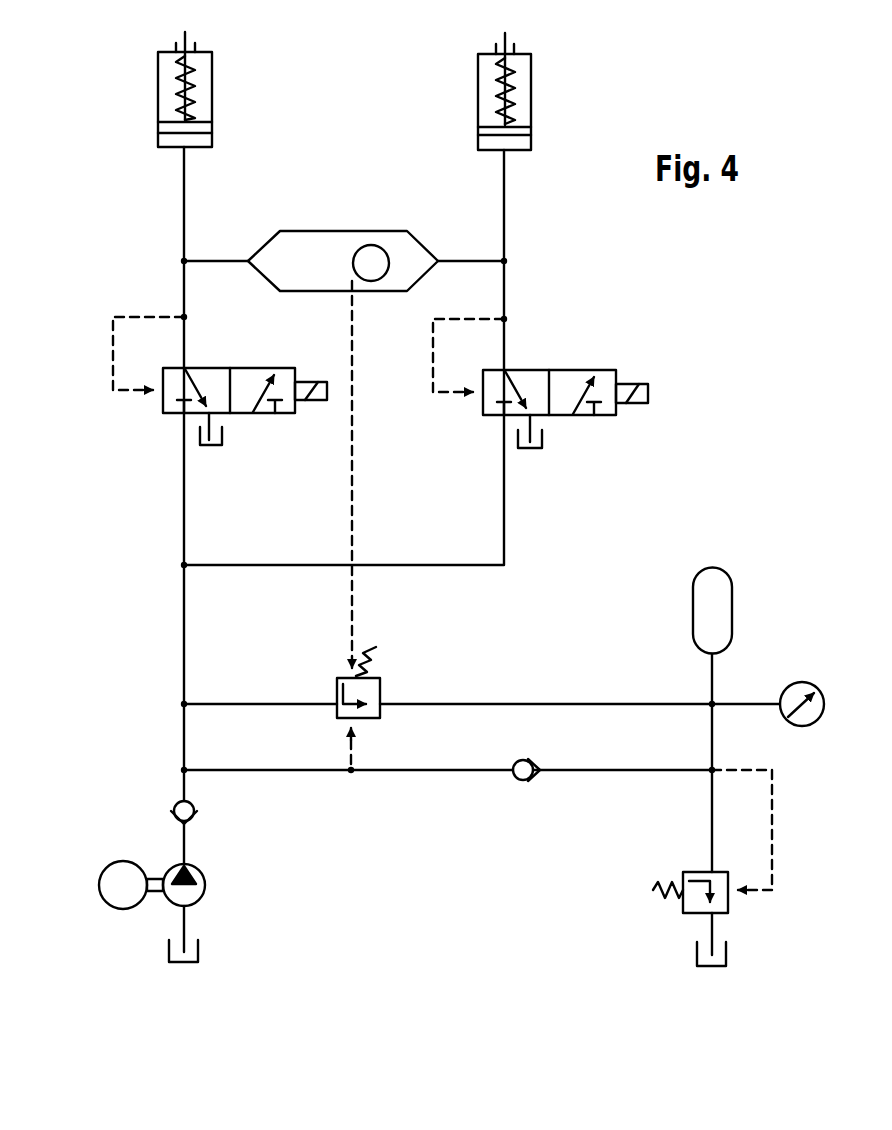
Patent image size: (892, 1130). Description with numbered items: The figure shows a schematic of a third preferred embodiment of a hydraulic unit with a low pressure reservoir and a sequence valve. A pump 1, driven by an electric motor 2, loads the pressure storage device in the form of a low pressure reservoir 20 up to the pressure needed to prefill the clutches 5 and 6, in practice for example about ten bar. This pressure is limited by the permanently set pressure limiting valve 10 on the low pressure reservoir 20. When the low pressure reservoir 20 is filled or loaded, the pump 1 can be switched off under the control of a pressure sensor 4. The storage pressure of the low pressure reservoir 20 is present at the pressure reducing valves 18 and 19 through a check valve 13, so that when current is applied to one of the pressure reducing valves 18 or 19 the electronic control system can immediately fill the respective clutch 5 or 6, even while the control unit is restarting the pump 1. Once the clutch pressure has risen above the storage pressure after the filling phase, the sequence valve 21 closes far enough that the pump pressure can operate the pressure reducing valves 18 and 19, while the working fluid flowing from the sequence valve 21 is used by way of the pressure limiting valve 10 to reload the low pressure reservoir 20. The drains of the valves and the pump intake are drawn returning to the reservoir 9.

The pump 1 is at (191, 894).
The electric motor 2 is at (99, 885).
The pressure sensor 4 is at (805, 720).
The clutch 5 is at (478, 68).
The clutch 6 is at (200, 68).
The reservoir / tank 9 is at (215, 446).
The pressure limiting valve 10 is at (703, 878).
The check valve 13 is at (520, 781).
The pressure reducing valve 18 is at (603, 378).
The pressure reducing valve 19 is at (245, 375).
The low pressure reservoir 20 is at (722, 603).
The sequence valve 21 is at (344, 686).